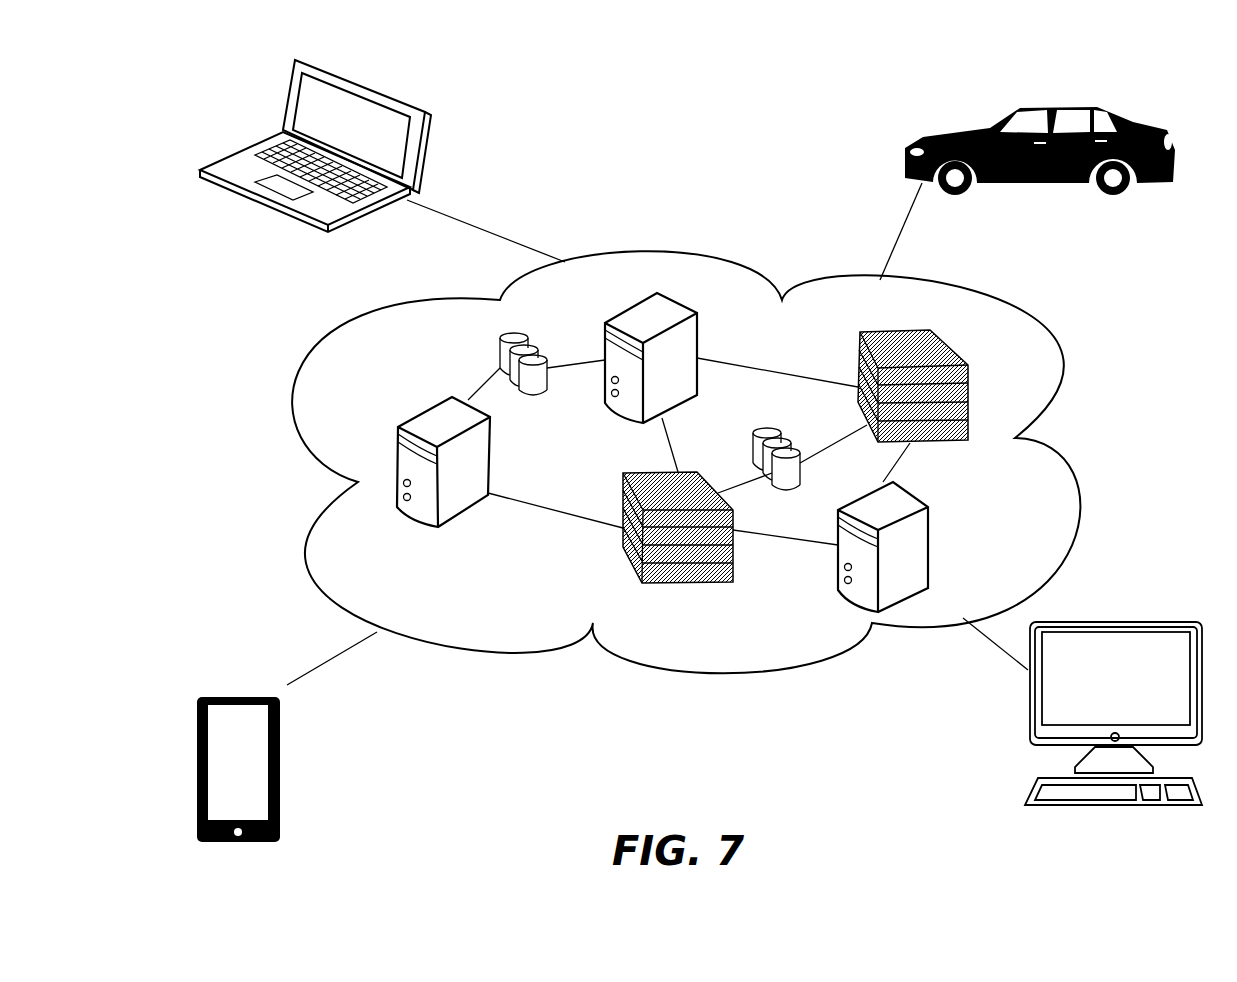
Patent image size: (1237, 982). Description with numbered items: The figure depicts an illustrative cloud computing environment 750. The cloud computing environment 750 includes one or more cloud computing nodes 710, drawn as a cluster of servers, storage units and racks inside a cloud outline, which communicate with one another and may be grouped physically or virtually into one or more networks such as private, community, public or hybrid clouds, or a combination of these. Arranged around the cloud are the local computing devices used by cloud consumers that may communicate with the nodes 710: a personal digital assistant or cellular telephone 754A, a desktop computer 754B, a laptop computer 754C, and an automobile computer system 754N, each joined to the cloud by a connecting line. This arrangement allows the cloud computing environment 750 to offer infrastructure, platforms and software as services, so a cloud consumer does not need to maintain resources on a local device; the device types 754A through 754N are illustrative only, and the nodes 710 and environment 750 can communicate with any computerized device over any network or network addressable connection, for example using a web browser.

The cloud computing environment 750 is at (317, 338).
The cloud computing nodes 710 is at (1050, 483).
The personal digital assistant or cellular telephone 754A is at (238, 705).
The desktop computer 754B is at (1158, 618).
The laptop computer 754C is at (408, 103).
The automobile computer system 754N is at (1037, 108).